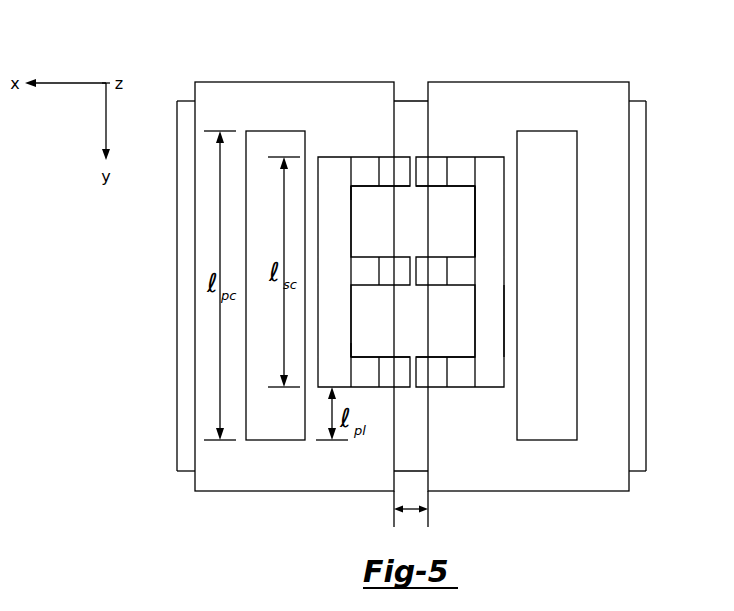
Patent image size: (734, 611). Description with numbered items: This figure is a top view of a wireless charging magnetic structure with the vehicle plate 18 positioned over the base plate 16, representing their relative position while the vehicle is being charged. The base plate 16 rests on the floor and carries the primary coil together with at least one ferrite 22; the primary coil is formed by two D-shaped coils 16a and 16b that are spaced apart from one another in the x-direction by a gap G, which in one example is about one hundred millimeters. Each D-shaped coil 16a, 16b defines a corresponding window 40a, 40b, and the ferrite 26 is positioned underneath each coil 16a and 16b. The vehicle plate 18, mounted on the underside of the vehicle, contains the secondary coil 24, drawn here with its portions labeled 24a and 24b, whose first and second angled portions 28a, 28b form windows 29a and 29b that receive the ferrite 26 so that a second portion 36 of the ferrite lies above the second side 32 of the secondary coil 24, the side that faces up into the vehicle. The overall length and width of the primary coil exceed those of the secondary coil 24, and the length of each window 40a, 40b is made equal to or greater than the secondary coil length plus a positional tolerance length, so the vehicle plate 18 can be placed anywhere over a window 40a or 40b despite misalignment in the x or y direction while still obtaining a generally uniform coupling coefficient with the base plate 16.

The base plate 16 is at (412, 291).
The D-shaped coil 16a is at (228, 491).
The D-shaped coil 16b is at (600, 491).
The vehicle plate 18 is at (437, 268).
The ferrite 22 is at (638, 192).
The secondary coil 24 is at (439, 157).
The first core leg 24a is at (338, 170).
The second core leg 24b is at (488, 168).
The ferrite 26 is at (400, 232).
The first angled portion 28a is at (363, 156).
The second angled portion 28b is at (462, 157).
The window 29a is at (350, 187).
The window 29b is at (351, 357).
The second side 32 is at (493, 310).
The second portion 36 is at (463, 231).
The window 40a is at (270, 440).
The window 40b is at (541, 440).
The gap G is at (411, 516).